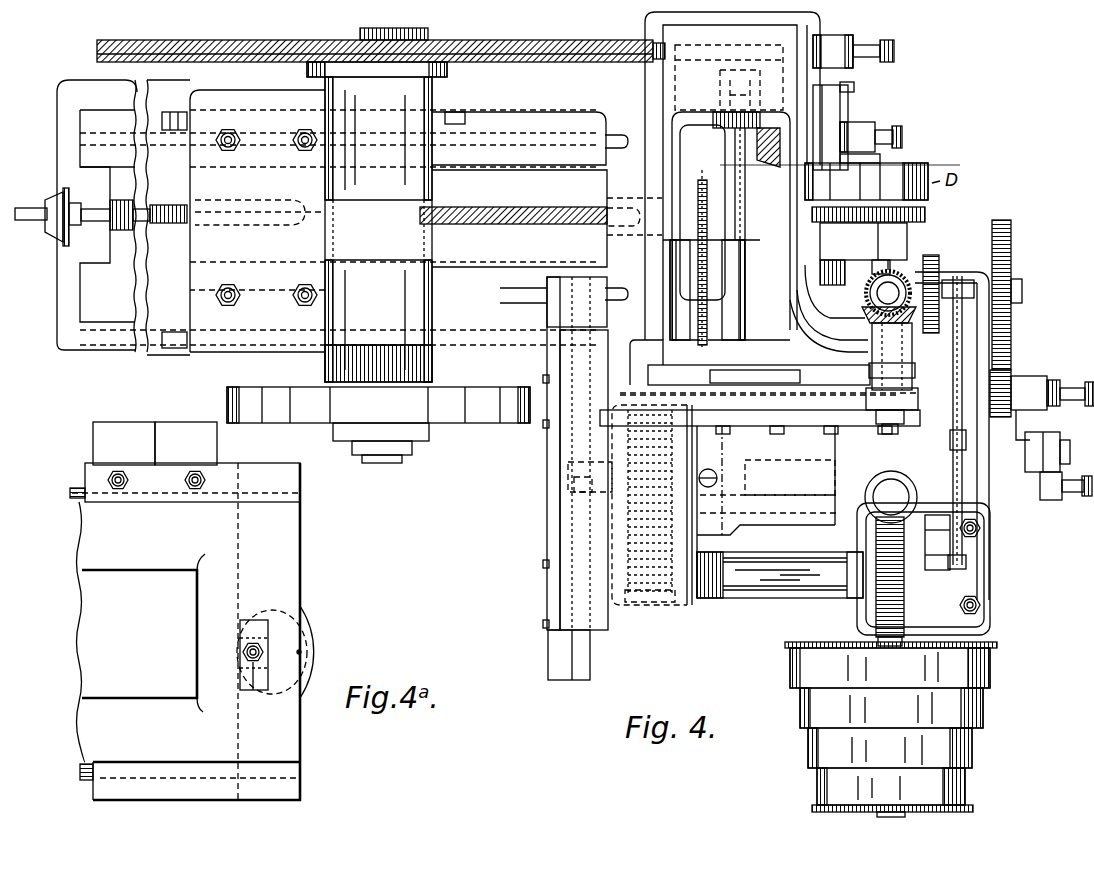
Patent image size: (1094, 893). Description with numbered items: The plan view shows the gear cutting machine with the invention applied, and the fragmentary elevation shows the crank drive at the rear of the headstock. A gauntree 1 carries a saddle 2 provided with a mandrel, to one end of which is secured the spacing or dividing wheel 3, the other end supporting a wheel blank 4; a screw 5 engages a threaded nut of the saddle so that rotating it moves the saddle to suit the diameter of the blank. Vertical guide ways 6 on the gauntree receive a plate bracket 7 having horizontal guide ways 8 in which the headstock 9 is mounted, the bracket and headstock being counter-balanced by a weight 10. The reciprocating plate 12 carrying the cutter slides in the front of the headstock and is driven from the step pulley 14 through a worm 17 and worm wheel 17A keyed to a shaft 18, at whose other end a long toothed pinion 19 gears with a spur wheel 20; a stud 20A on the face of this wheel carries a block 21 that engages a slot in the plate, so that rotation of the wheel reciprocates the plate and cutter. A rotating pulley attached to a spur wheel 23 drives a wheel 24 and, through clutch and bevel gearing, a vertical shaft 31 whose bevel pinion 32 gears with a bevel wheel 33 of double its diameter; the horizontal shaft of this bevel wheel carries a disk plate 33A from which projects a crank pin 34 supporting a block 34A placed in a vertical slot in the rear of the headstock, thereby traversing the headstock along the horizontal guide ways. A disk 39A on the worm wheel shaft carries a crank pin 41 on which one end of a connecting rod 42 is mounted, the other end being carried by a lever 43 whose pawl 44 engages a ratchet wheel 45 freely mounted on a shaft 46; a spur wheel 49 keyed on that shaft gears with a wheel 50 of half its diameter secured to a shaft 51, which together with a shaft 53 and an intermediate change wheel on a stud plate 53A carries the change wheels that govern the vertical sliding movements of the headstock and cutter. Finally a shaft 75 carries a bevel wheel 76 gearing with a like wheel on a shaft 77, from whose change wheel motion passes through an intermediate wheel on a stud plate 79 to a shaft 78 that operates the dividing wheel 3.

In FIG. 4, the gauntree 1 is at (123, 217).
In FIG. 4, the saddle 2 is at (377, 205).
In FIG. 4, the spacing or dividing wheel 3 is at (528, 46).
In FIG. 4, the wheel blank 4 is at (227, 407).
In FIG. 4, the screw 5 is at (48, 207).
In FIG. 4, the vertical guide ways 6 is at (650, 346).
In FIG. 4A, the vertical guide ways 6 is at (177, 430).
In FIG. 4, the plate bracket 7 is at (934, 436).
In FIG. 4A, the plate bracket 7 is at (242, 560).
In FIG. 4, the horizontal guide ways 8 is at (905, 412).
In FIG. 4A, the horizontal guide ways 8 is at (94, 439).
In FIG. 4, the headstock 9 is at (576, 334).
In FIG. 4A, the headstock 9 is at (92, 543).
In FIG. 4, the weight 10 is at (732, 181).
In FIG. 4, the reciprocating plate 12 is at (548, 334).
In FIG. 4, the step pulley 14 is at (978, 715).
In FIG. 4, the worm 17 is at (902, 492).
In FIG. 4, the worm wheel 17A is at (902, 630).
In FIG. 4, the shaft 18 is at (905, 590).
In FIG. 4, the long toothed pinion 19 is at (676, 602).
In FIG. 4, the spur wheel 20 is at (672, 450).
In FIG. 4, the stud 20A is at (574, 480).
In FIG. 4, the block 21 is at (568, 464).
In FIG. 4, the spur wheel 23 is at (884, 225).
In FIG. 4, the wheel 24 is at (925, 214).
In FIG. 4, the vertical shaft 31 is at (894, 274).
In FIG. 4, the bevel pinion 32 is at (866, 294).
In FIG. 4, the bevel wheel 33 is at (862, 312).
In FIG. 4, the disk plate 33A is at (875, 353).
In FIG. 4A, the disk plate 33A is at (304, 634).
In FIG. 4, the crank pin 34 is at (878, 428).
In FIG. 4A, the crank pin 34 is at (240, 647).
In FIG. 4, the block 34A is at (893, 435).
In FIG. 4A, the block 34A is at (246, 672).
In FIG. 4, the disk 39A is at (938, 570).
In FIG. 4, the crank pin 41 is at (968, 562).
In FIG. 4, the connecting rod 42 is at (950, 432).
In FIG. 4, the lever 43 is at (965, 296).
In FIG. 4, the pawl 44 is at (952, 331).
In FIG. 4, the ratchet wheel 45 is at (940, 262).
In FIG. 4, the shaft 46 is at (1023, 290).
In FIG. 4, the spur wheel 49 is at (1011, 258).
In FIG. 4, the wheel 50 is at (1008, 373).
In FIG. 4, the shaft 51 is at (1065, 382).
In FIG. 4, the shaft 53 is at (1060, 498).
In FIG. 4, the stud plate 53A is at (1055, 460).
In FIG. 4, the shaft 75 is at (742, 186).
In FIG. 4, the bevel wheel 76 is at (728, 119).
In FIG. 4, the shaft 77 is at (872, 130).
In FIG. 4, the shaft 78 is at (872, 40).
In FIG. 4, the stud plate 79 is at (846, 109).